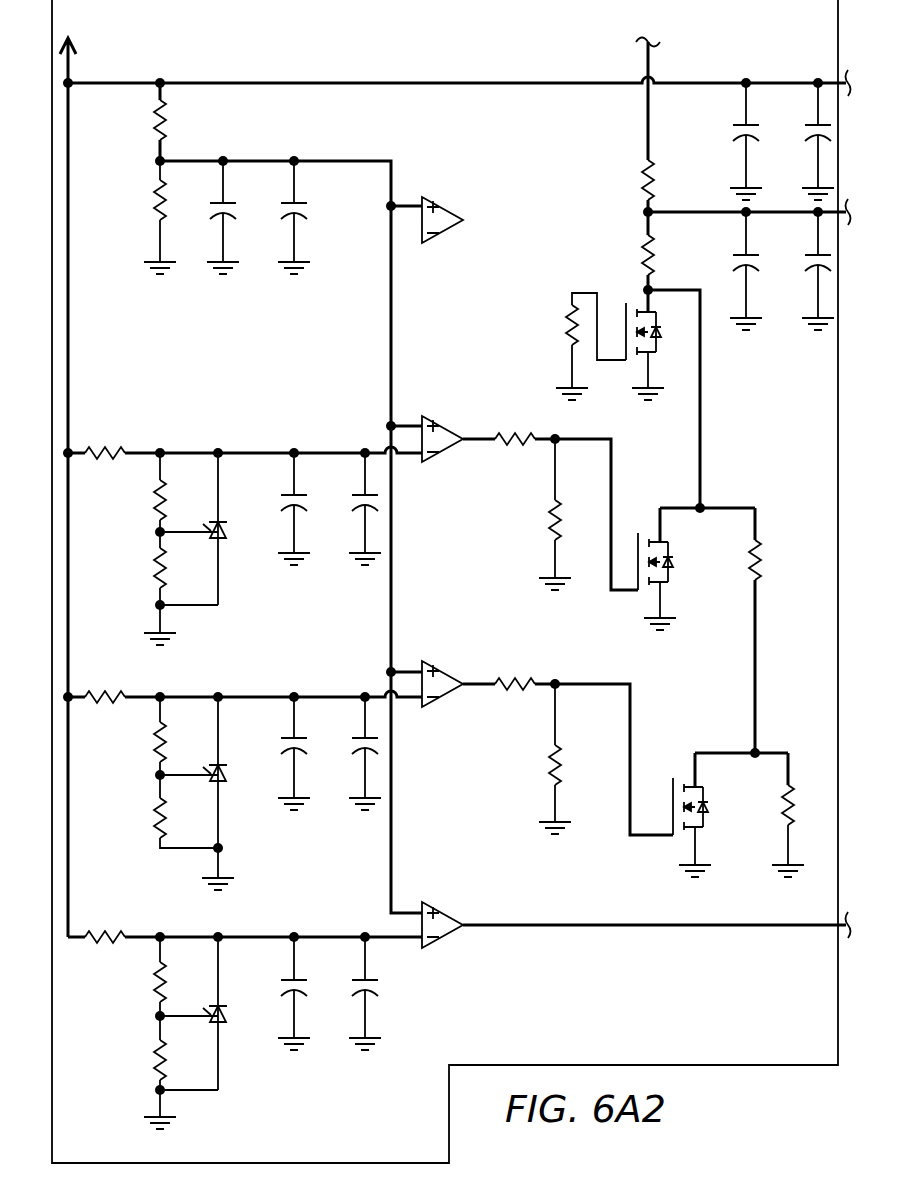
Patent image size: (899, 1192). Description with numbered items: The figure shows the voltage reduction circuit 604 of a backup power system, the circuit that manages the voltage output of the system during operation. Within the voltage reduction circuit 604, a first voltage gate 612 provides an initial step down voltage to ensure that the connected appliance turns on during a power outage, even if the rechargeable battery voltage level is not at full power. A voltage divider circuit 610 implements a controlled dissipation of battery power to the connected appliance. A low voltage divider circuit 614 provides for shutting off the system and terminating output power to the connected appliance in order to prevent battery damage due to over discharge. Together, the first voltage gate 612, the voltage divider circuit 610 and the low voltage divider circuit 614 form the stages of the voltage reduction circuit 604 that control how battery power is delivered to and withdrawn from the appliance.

The voltage reduction circuit 604 is at (392, 33).
The first voltage gate 612 is at (138, 532).
The voltage divider circuit 610 is at (138, 775).
The low voltage divider circuit 614 is at (138, 1016).